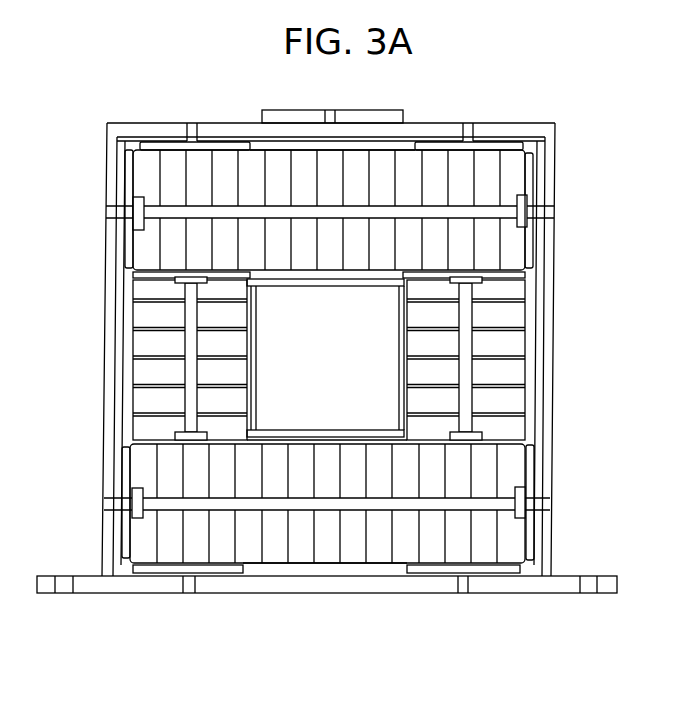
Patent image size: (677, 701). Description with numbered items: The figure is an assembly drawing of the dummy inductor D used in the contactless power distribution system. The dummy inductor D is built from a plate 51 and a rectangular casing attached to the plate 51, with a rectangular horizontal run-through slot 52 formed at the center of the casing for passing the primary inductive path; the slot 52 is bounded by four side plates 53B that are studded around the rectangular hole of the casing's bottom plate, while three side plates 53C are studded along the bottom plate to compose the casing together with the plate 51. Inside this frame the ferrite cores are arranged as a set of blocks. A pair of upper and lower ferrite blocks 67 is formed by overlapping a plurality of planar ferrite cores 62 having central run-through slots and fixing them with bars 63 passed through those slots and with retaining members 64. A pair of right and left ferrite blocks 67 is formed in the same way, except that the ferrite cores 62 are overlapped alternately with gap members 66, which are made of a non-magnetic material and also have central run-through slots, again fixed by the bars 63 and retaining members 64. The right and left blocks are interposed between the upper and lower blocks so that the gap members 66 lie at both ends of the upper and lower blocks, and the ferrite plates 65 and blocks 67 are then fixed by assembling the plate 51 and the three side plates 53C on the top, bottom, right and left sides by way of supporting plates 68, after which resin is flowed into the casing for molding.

The dummy inductor D is at (562, 142).
The plate 51 is at (607, 578).
The horizontal run-through slot 52 is at (368, 402).
The side plate 53B is at (253, 342).
The side plate 53C is at (245, 135).
The planar ferrite core 62 is at (384, 164).
The bar 63 is at (197, 210).
The retaining member 64 is at (134, 210).
The ferrite plate 65 is at (282, 150).
The gap member 66 is at (522, 294).
The ferrite block 67 is at (128, 398).
The supporting plate 68 is at (168, 146).